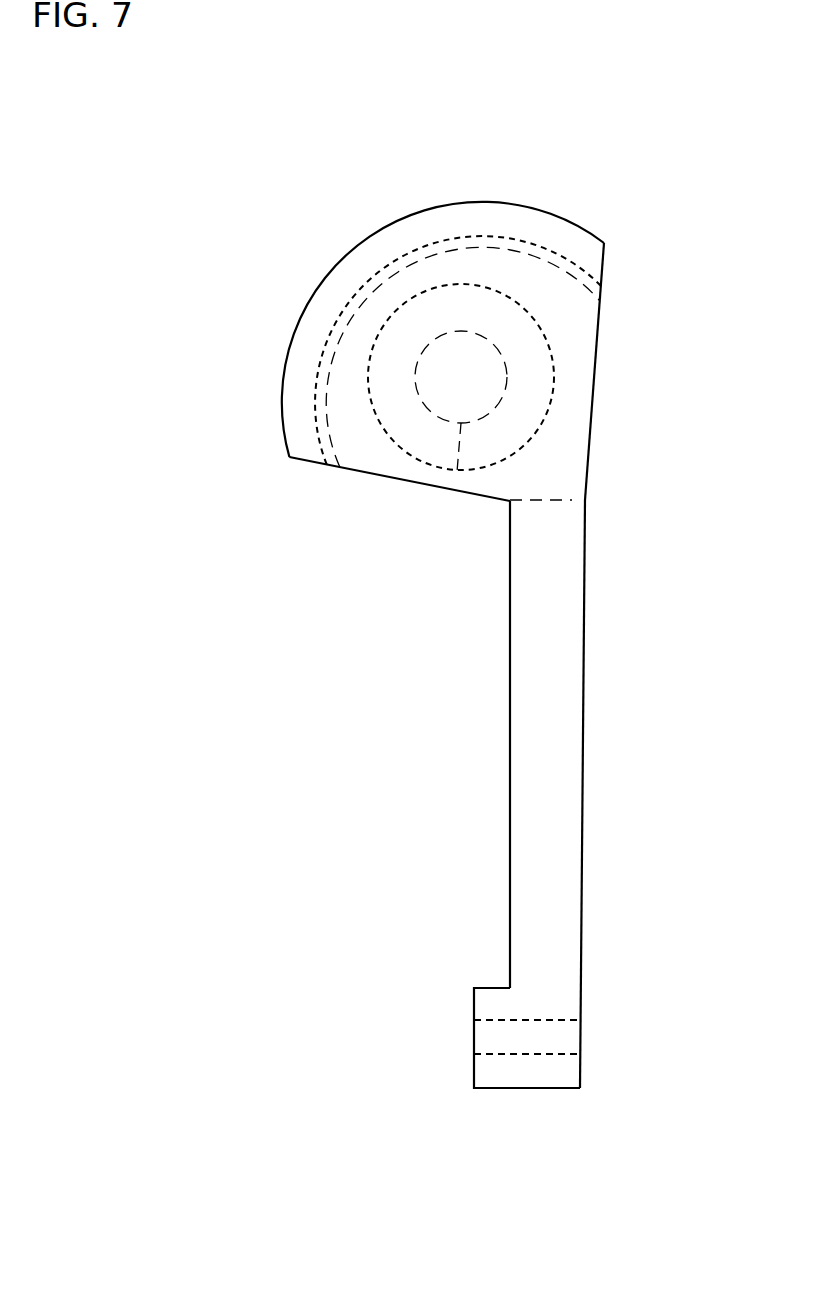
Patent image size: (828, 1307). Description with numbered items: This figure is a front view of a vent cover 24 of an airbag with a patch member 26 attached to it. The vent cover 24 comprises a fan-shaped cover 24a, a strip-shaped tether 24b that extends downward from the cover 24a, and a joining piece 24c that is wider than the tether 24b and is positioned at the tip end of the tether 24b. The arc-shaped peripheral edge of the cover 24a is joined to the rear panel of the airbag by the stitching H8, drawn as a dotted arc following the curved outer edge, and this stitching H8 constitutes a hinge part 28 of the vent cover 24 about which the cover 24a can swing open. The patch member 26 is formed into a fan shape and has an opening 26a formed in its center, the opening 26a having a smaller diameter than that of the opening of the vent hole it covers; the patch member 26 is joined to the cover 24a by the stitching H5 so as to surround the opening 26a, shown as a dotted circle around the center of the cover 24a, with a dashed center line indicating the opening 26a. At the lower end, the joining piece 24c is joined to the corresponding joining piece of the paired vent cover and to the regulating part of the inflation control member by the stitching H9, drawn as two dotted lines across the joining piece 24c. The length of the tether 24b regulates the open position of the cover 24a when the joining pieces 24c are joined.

The vent cover 24 is at (300, 279).
The cover 24a is at (381, 247).
The tether 24b is at (555, 834).
The joining piece 24c is at (482, 1044).
The patch member 26 is at (308, 397).
The opening 26a is at (457, 472).
The hinge part 28 is at (388, 357).
The stitching H5 is at (556, 378).
The stitching H8 is at (323, 348).
The stitching H9 is at (522, 1022).